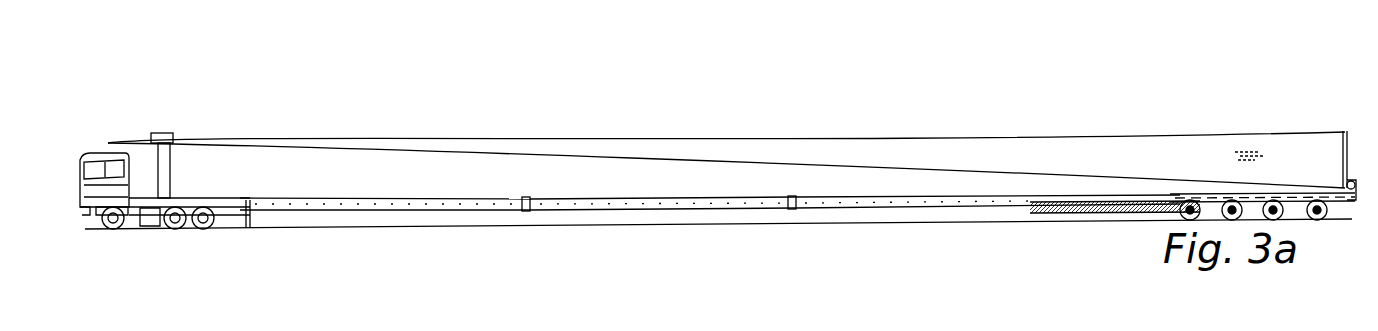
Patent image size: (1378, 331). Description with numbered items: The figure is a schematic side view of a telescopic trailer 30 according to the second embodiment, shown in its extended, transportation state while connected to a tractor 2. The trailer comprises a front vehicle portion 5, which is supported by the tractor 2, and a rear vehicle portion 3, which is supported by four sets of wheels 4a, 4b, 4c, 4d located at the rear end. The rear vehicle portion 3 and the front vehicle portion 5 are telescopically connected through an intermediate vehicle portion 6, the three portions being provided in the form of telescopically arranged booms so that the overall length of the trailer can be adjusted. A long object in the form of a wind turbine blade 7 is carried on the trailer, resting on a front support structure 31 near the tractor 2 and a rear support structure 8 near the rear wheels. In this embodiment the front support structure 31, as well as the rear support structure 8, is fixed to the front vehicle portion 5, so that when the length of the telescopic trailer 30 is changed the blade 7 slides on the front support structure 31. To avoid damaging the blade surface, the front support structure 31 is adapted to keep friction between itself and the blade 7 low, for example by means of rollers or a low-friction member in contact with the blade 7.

The tractor 2 is at (95, 148).
The front support structure 31 is at (160, 133).
The wind turbine blade 7 is at (1047, 160).
The front vehicle portion 5 is at (443, 208).
The intermediate vehicle portion 6 is at (668, 203).
The rear vehicle portion 3 is at (880, 205).
The telescopic trailer 30 is at (777, 240).
The set of wheels 4a is at (1188, 202).
The set of wheels 4b is at (1230, 202).
The set of wheels 4c is at (1272, 202).
The set of wheels 4d is at (1316, 202).
The rear support structure 8 is at (1348, 152).